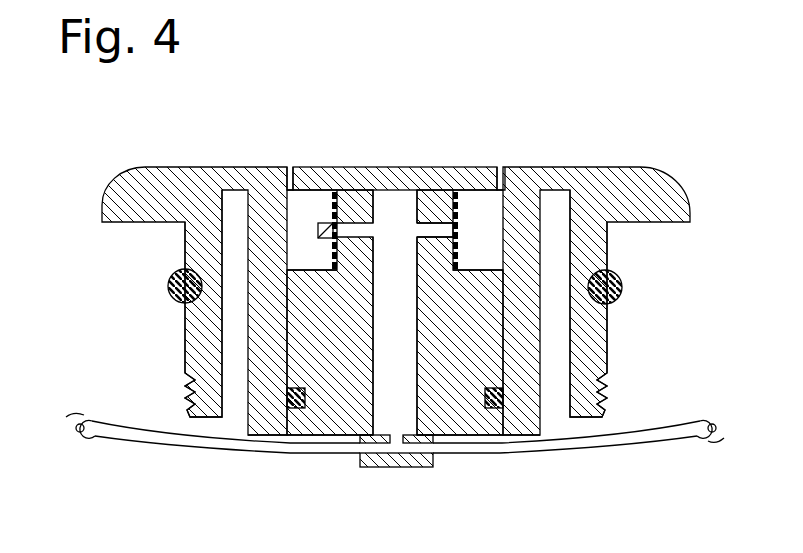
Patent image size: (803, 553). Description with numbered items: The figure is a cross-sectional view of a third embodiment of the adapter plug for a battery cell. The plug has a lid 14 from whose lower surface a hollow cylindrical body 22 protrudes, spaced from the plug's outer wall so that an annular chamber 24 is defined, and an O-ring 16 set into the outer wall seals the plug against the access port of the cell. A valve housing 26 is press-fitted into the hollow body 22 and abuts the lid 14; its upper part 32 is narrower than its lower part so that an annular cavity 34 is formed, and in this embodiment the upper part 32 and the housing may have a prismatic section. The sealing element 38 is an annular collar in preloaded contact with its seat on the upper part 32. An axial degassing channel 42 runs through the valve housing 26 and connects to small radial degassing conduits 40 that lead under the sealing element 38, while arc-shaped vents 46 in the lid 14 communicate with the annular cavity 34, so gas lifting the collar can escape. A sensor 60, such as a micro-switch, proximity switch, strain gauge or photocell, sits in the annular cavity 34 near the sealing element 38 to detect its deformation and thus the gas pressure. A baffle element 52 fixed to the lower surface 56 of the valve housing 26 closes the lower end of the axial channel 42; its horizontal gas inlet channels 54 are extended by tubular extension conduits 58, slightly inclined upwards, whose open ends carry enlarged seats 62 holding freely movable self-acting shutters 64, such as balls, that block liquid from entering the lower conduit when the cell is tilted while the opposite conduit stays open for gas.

The lid 14 is at (185, 176).
The annular chamber 24 is at (233, 207).
The upper part of the valve housing 32 is at (457, 224).
The valve housing 26 is at (480, 340).
The axial degassing channel 42 is at (388, 210).
The radial degassing conduits 40 is at (433, 227).
The sensor 60 is at (320, 231).
The vents 46 is at (288, 165).
The sealing element 38 is at (457, 210).
The annular cavity 34 is at (297, 247).
The O-ring 16 is at (167, 287).
The hollow cylindrical body 22 is at (525, 403).
The tubular extension conduits 58 is at (205, 450).
The enlarged seat 62 is at (78, 413).
The self-acting shutters 64 is at (68, 424).
The lower surface of the valve housing 56 is at (313, 438).
The baffle element 52 is at (377, 463).
The radial channels 54 is at (397, 448).